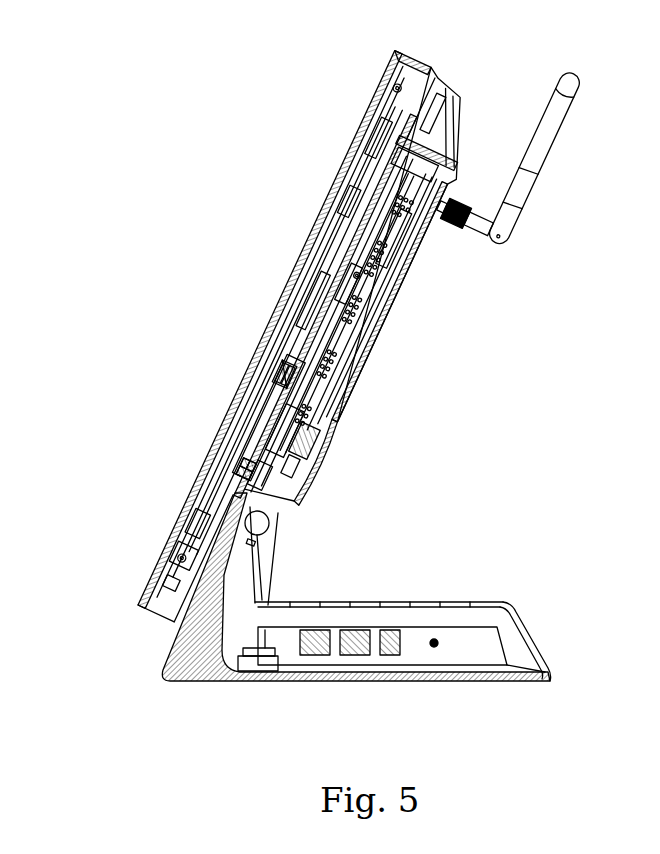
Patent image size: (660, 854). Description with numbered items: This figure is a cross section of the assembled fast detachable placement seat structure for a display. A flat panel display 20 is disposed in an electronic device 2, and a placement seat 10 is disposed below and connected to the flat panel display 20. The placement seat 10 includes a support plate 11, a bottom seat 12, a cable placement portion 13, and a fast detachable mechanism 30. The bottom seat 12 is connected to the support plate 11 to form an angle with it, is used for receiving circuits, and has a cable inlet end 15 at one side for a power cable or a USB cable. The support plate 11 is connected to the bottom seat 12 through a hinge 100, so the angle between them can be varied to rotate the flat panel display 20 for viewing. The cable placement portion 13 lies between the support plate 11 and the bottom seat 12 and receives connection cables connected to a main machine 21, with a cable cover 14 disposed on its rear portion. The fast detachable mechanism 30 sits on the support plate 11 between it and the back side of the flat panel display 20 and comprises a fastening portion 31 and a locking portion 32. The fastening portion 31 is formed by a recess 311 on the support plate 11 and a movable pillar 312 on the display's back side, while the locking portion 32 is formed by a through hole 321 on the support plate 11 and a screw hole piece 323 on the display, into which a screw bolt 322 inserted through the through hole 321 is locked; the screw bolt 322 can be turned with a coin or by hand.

The electronic device 2 is at (458, 74).
The flat panel display 20 is at (353, 177).
The main machine 21 is at (365, 322).
The support plate 11 is at (263, 423).
The cable cover 14 is at (318, 468).
The fast detachable mechanism 30 is at (103, 340).
The fastening portion 31 is at (283, 378).
The recess 311 is at (283, 357).
The pillar 312 is at (285, 373).
The locking portion 32 is at (220, 462).
The through hole 321 is at (238, 480).
The screw bolt 322 is at (242, 467).
The screw hole piece 323 is at (233, 473).
The cable placement portion 13 is at (245, 492).
The hinge 100 is at (258, 523).
The bottom seat 12 is at (195, 672).
The placement seat 10 is at (410, 590).
The cable inlet end 15 is at (525, 665).